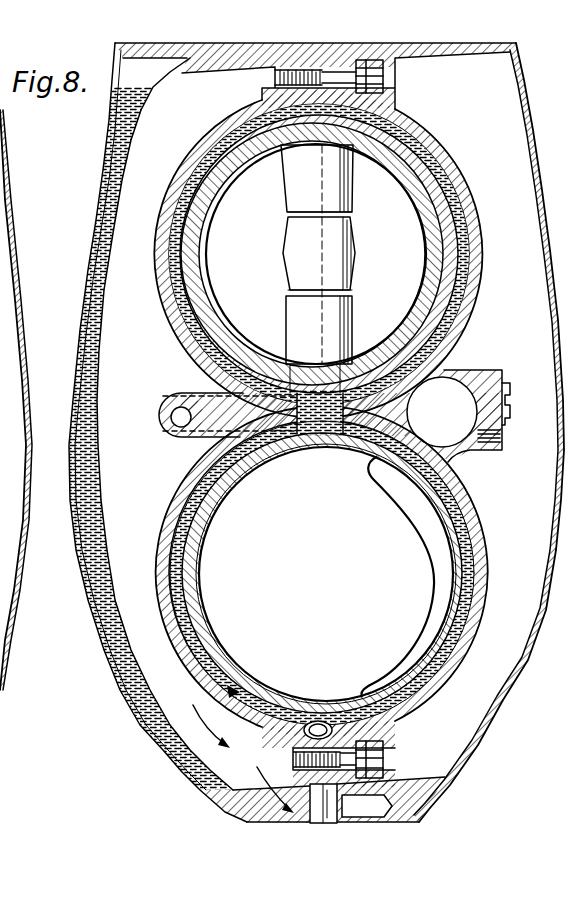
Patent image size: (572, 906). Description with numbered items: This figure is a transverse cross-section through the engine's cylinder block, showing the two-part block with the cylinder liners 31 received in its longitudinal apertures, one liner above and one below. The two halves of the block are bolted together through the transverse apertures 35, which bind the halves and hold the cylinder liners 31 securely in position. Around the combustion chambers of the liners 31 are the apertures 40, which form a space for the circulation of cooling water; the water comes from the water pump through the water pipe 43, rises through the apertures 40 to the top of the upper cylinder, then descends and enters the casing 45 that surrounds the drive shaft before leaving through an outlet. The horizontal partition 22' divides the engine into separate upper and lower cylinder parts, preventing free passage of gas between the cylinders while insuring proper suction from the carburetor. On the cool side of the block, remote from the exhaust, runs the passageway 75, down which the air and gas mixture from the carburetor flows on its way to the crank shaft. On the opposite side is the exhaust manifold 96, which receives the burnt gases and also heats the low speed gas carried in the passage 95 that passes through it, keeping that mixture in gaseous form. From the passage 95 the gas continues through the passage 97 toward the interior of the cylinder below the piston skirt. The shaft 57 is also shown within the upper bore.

The horizontal partition 22' is at (322, 400).
The cylinder liner 31 is at (203, 222).
The transverse aperture 35 is at (385, 69).
The aperture 40 is at (195, 188).
The water pipe 43 is at (339, 806).
The casing 45 is at (250, 60).
The shaft 57 is at (352, 292).
The passageway 75 is at (480, 418).
The passage 95 is at (178, 420).
The exhaust manifold 96 is at (101, 287).
The passage 97 is at (188, 440).